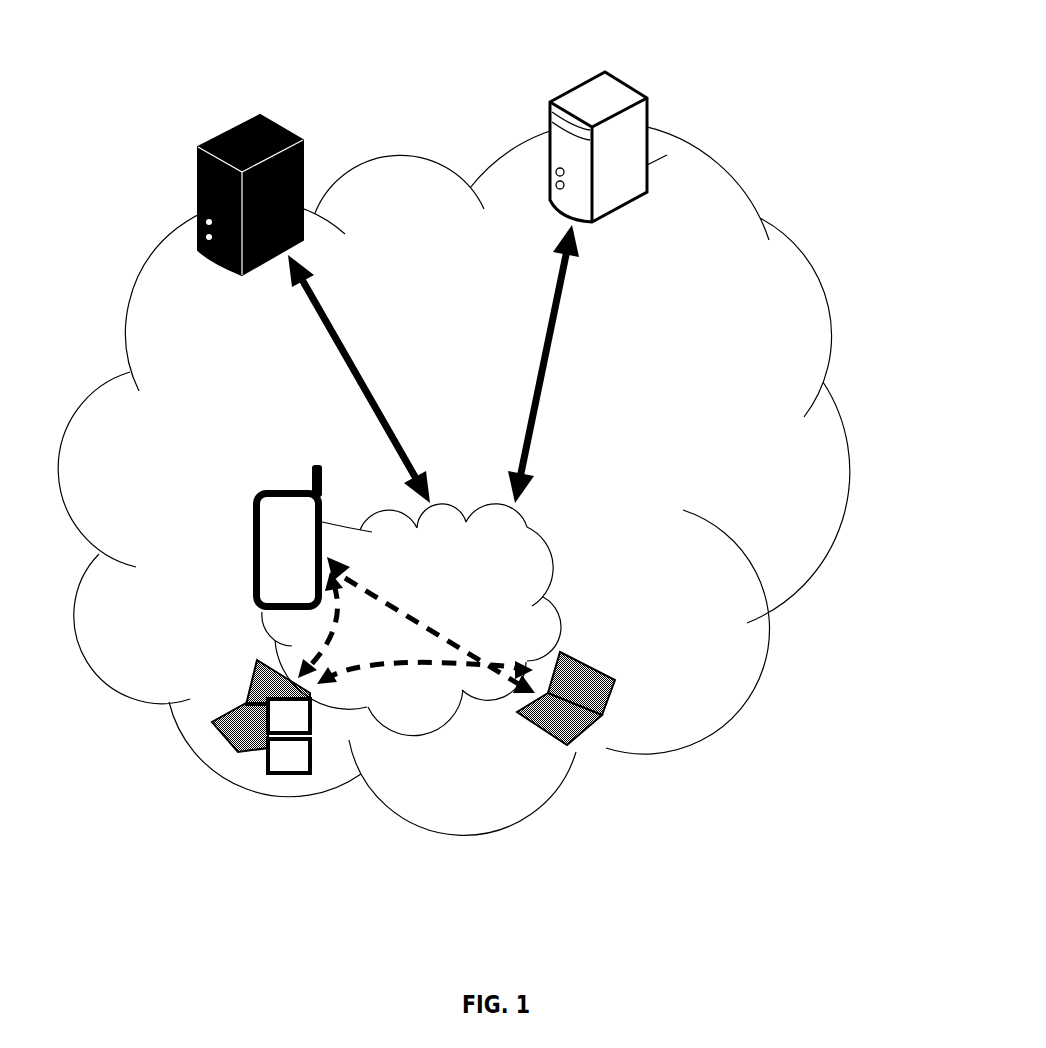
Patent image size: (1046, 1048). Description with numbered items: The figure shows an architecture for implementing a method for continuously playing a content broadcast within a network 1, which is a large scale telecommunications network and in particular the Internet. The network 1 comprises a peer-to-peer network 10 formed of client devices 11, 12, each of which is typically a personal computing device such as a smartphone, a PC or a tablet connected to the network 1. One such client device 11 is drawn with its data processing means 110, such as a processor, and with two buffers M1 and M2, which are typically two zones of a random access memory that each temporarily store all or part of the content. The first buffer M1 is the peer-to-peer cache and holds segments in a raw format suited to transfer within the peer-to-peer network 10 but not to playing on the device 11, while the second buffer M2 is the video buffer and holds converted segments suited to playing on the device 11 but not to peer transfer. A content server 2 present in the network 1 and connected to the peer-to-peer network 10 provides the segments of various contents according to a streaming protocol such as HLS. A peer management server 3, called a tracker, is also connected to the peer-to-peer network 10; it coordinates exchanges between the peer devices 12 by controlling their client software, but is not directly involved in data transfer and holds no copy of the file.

The network 1 is at (810, 598).
The content server 2 is at (228, 120).
The peer management server 3 is at (642, 80).
The peer-to-peer network 10 is at (470, 517).
The client device 11 is at (228, 738).
The client device 12 is at (250, 515).
The data processing means 110 is at (312, 717).
The first buffer M1 is at (290, 777).
The second buffer M2 is at (332, 795).